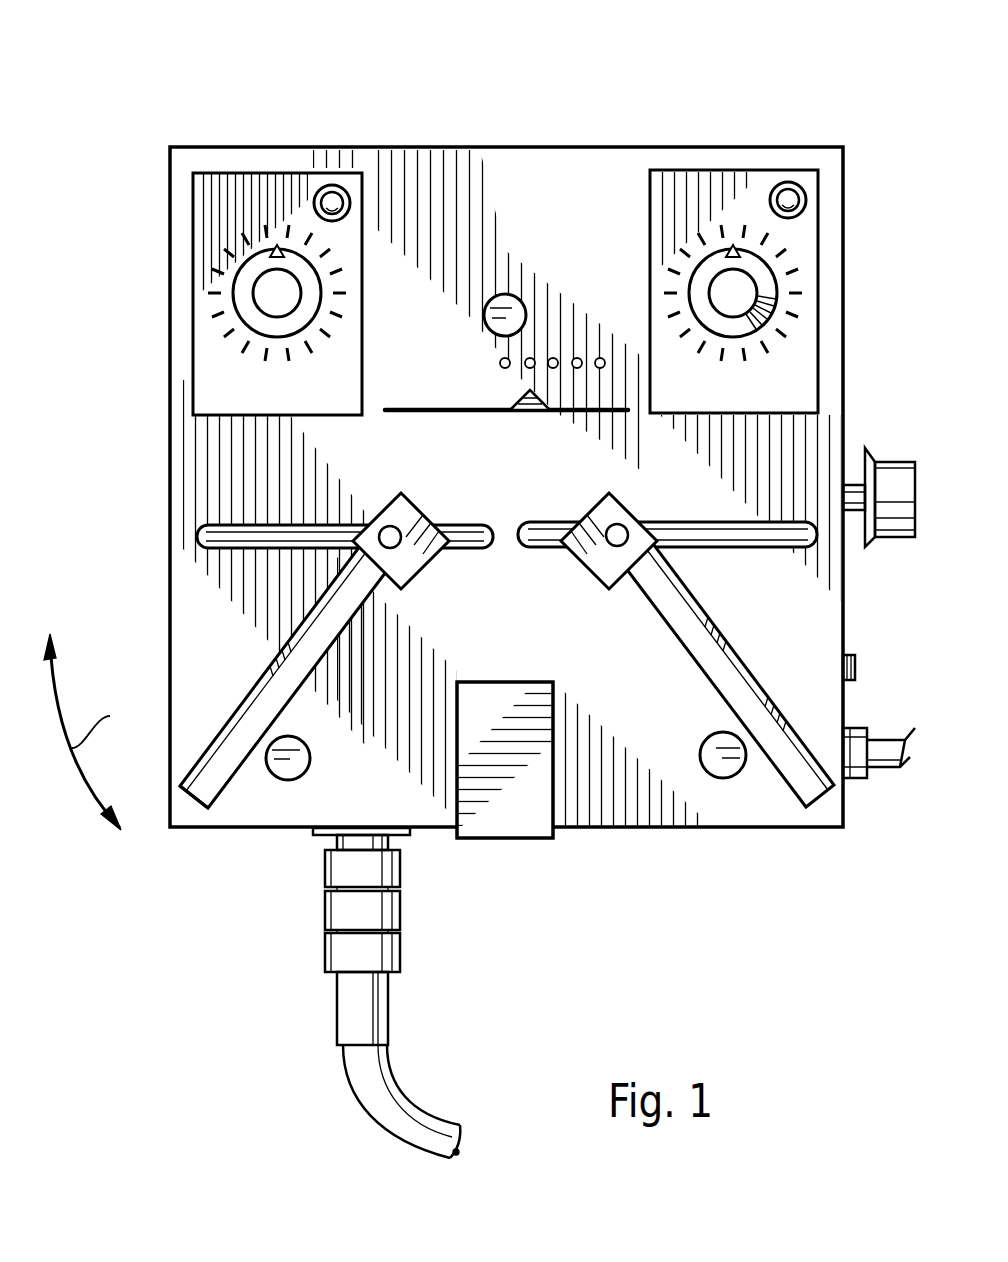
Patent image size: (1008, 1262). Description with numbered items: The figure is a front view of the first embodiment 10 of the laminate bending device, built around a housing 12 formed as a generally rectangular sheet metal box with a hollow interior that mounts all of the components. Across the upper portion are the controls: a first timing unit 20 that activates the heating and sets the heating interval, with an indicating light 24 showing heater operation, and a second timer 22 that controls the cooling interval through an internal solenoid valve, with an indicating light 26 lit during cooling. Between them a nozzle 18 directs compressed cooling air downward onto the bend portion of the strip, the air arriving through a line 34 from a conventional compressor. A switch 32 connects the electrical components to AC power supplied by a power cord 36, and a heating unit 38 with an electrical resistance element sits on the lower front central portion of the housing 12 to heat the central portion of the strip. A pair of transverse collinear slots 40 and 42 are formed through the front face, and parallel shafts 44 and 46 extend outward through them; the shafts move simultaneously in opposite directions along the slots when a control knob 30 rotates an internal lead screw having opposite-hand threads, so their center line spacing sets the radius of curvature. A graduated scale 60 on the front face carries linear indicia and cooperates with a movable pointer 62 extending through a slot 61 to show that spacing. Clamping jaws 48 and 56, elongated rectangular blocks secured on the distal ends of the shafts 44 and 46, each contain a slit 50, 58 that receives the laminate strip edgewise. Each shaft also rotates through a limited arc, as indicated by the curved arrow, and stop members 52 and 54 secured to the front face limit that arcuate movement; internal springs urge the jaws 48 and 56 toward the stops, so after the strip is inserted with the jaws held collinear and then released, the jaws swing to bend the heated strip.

The first embodiment 10 is at (514, 62).
The housing 12 is at (170, 276).
The nozzle 18 is at (523, 312).
The first timing unit 20 is at (205, 383).
The second timer 22 is at (808, 355).
The indicating light 24 is at (320, 188).
The indicating light 26 is at (806, 205).
The control knob 30 is at (890, 535).
The switch 32 is at (858, 668).
The line 34 is at (325, 952).
The power cord 36 is at (884, 768).
The heating unit 38 is at (543, 830).
The slot 40 is at (192, 548).
The slot 42 is at (700, 546).
The shaft 44 is at (420, 512).
The shaft 46 is at (636, 512).
The clamping jaw 48 is at (271, 709).
The slit 50 is at (210, 800).
The stop member 52 is at (278, 775).
The stop member 54 is at (700, 752).
The clamping jaw 56 is at (674, 664).
The slit 58 is at (662, 670).
The graduated scale 60 is at (508, 358).
The slot 61 is at (492, 414).
The movable pointer 62 is at (520, 398).